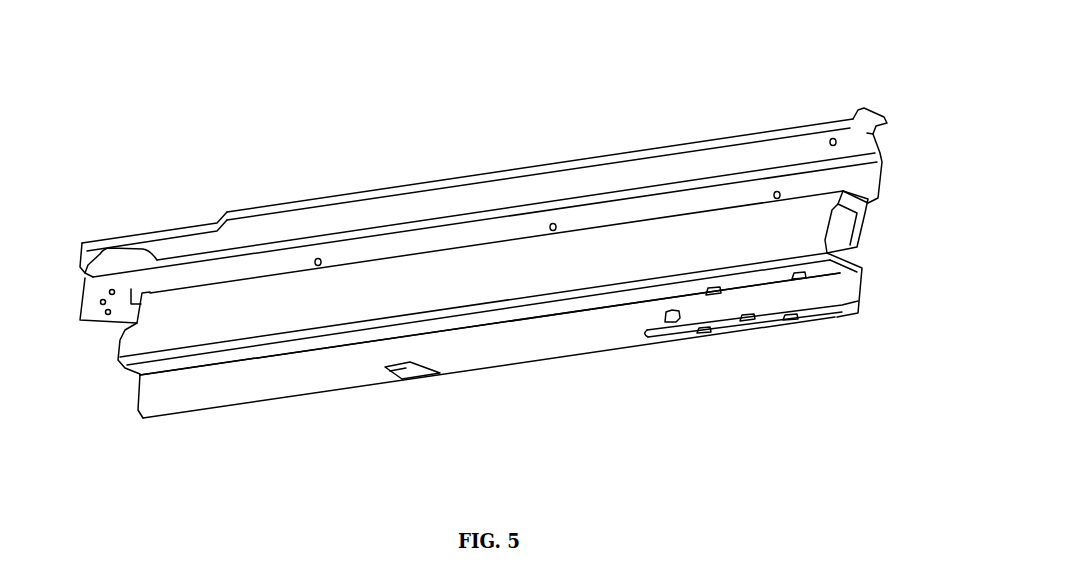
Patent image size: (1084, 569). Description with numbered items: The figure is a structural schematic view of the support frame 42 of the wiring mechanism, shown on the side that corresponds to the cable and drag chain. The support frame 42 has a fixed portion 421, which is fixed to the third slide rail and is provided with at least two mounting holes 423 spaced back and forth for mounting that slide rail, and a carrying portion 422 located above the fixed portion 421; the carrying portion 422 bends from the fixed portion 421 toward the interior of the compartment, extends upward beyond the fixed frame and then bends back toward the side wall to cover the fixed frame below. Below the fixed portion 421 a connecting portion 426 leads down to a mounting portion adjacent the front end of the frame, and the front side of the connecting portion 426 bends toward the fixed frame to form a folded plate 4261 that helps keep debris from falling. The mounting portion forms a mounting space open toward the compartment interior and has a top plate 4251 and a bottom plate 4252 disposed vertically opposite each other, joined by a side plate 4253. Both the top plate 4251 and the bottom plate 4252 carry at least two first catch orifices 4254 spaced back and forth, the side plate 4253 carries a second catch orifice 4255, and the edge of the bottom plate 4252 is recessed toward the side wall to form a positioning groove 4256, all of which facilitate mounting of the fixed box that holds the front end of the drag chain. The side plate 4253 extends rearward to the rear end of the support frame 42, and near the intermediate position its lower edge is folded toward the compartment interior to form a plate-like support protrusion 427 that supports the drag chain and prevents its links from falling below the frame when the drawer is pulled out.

The support frame 42 is at (520, 32).
The fixed portion 421 is at (866, 168).
The carrying portion 422 is at (781, 121).
The mounting holes 423 is at (320, 260).
The folded plate 4261 is at (850, 228).
The top plate 4251 is at (840, 270).
The bottom plate 4252 is at (840, 313).
The side plate 4253 is at (518, 350).
The first catch orifice 4254 is at (715, 298).
The second catch orifice 4255 is at (665, 318).
The positioning groove 4256 is at (747, 320).
The connecting portion 426 is at (117, 337).
The support protrusion 427 is at (413, 383).